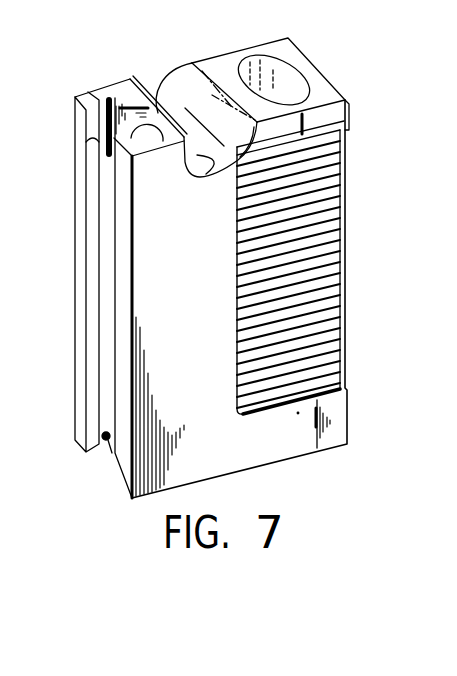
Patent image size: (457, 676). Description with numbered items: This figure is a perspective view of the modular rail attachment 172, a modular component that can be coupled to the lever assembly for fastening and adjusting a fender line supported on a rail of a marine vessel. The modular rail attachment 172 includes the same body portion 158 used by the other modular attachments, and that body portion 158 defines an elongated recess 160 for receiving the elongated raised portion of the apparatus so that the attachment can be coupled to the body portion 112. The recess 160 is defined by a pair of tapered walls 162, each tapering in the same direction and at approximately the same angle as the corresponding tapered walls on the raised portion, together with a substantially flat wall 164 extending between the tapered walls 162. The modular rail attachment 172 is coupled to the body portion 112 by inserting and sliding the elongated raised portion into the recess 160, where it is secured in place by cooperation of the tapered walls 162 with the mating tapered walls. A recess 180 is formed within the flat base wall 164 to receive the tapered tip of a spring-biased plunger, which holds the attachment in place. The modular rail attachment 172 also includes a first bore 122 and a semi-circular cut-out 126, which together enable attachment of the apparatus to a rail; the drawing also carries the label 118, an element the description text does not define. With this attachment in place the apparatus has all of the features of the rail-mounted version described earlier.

The body portion 112 is at (345, 88).
The semicylindrical channel 118 is at (218, 62).
The first bore 122 is at (285, 76).
The semi-circular cut-out 126 is at (212, 174).
The body portion 158 is at (120, 95).
The elongated recess 160 is at (107, 218).
The tapered walls 162 is at (88, 140).
The flat wall 164 is at (108, 263).
The modular rail attachment 172 is at (364, 151).
The recess 180 is at (104, 452).